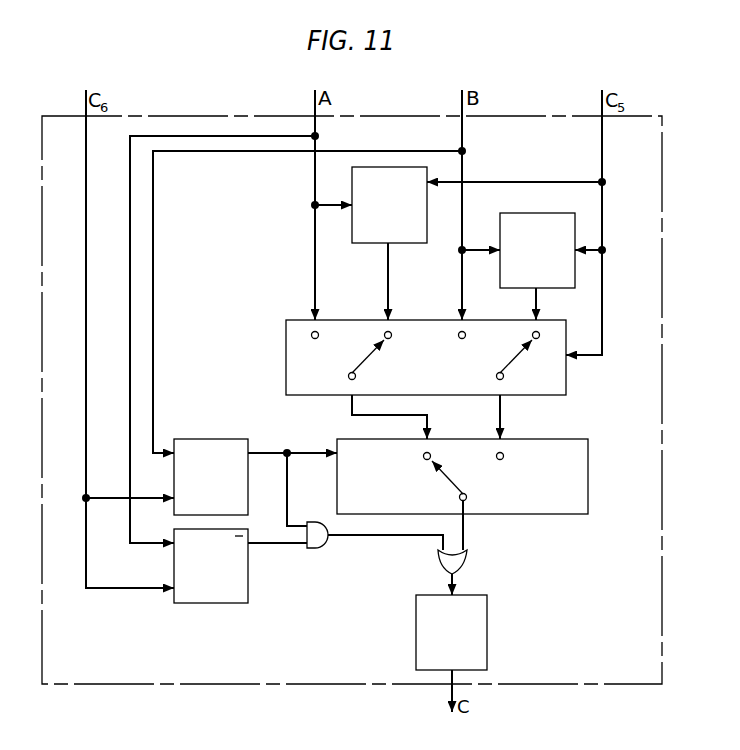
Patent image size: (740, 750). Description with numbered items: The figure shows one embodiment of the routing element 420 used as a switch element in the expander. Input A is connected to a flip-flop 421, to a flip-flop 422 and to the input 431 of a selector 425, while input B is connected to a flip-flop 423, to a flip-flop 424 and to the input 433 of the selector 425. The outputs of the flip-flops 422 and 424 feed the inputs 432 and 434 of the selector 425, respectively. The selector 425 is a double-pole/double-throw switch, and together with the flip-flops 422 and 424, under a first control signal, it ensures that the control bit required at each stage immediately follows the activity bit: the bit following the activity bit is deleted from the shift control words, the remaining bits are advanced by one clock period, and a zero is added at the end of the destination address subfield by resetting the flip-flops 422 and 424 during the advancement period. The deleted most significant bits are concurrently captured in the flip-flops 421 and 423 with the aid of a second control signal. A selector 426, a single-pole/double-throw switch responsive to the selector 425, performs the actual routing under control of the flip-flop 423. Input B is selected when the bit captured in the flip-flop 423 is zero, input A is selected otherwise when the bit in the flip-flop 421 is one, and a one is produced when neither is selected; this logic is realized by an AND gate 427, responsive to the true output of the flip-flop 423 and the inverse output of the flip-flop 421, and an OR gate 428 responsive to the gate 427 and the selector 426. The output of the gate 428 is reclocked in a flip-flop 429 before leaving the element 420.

The routing element 420 is at (57, 116).
The flip-flop 421 is at (200, 603).
The flip-flop 422 is at (373, 243).
The flip-flop 423 is at (203, 439).
The flip-flop 424 is at (527, 213).
The selector 425 is at (442, 300).
The selector 426 is at (588, 455).
The AND gate 427 is at (322, 547).
The OR gate 428 is at (466, 561).
The flip-flop 429 is at (487, 638).
The input 431 is at (312, 303).
The input 432 is at (385, 303).
The input 433 is at (459, 303).
The input 434 is at (533, 302).